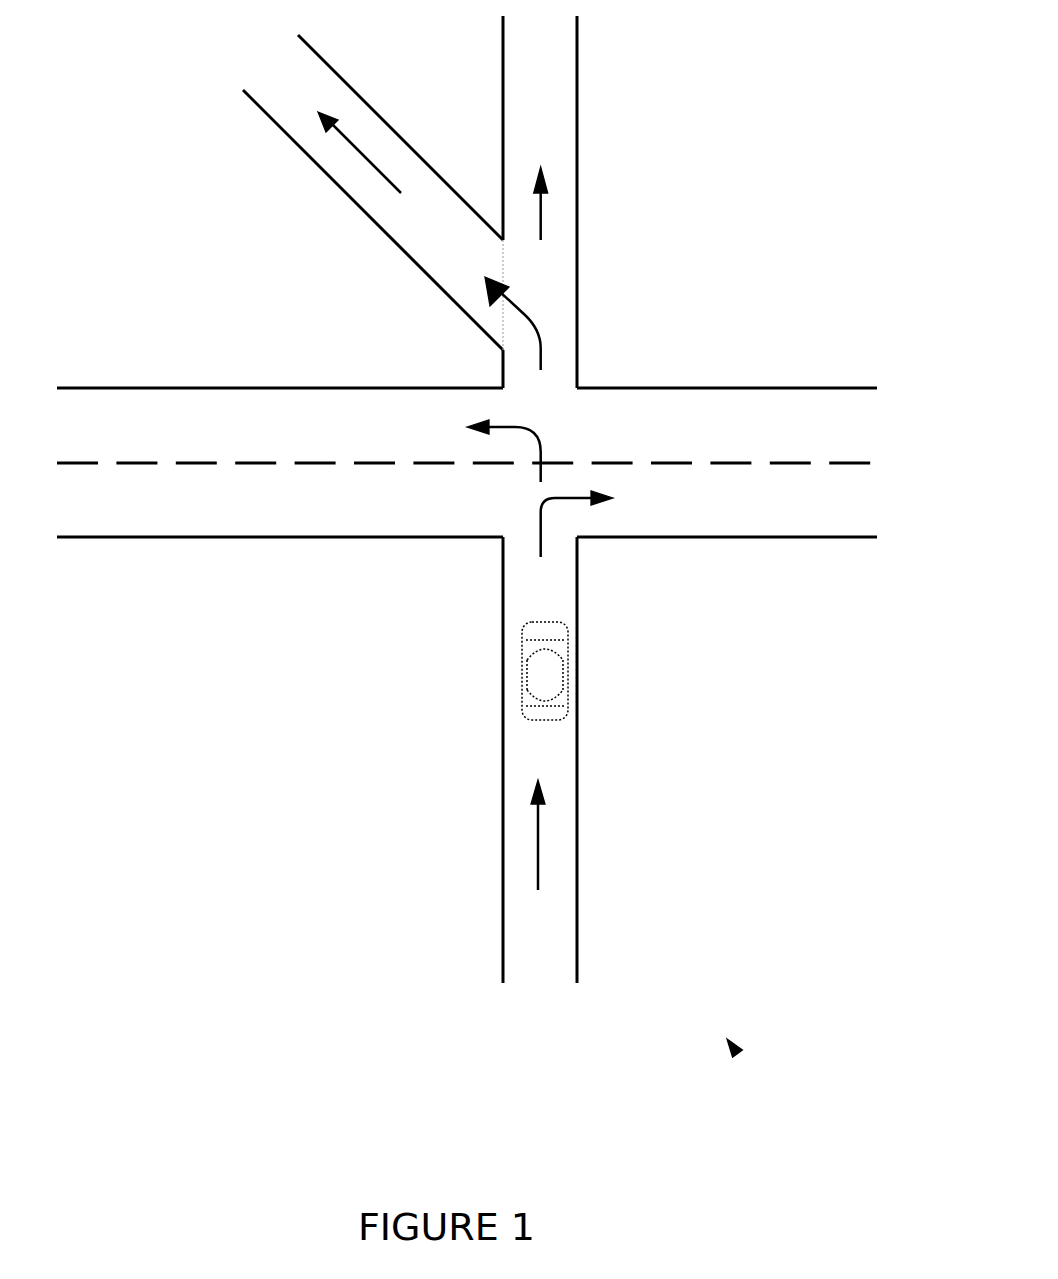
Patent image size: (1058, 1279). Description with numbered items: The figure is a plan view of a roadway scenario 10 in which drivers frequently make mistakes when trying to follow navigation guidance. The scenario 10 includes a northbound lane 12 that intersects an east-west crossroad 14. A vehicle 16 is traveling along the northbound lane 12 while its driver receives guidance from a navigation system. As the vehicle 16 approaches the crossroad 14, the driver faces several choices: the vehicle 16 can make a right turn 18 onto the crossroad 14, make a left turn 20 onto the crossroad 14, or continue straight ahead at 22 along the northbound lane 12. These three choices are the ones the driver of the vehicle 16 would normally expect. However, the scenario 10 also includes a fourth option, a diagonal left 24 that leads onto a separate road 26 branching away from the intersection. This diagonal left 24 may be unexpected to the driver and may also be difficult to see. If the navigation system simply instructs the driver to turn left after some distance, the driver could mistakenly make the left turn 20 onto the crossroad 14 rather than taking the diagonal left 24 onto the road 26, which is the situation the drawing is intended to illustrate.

The roadway scenario 10 is at (738, 1054).
The northbound lane 12 is at (544, 853).
The east-west crossroad 14 is at (112, 538).
The vehicle 16 is at (555, 718).
The right turn 18 is at (541, 540).
The left turn 20 is at (541, 441).
The straight ahead 22 is at (541, 220).
The diagonal left 24 is at (541, 333).
The road 26 is at (375, 164).